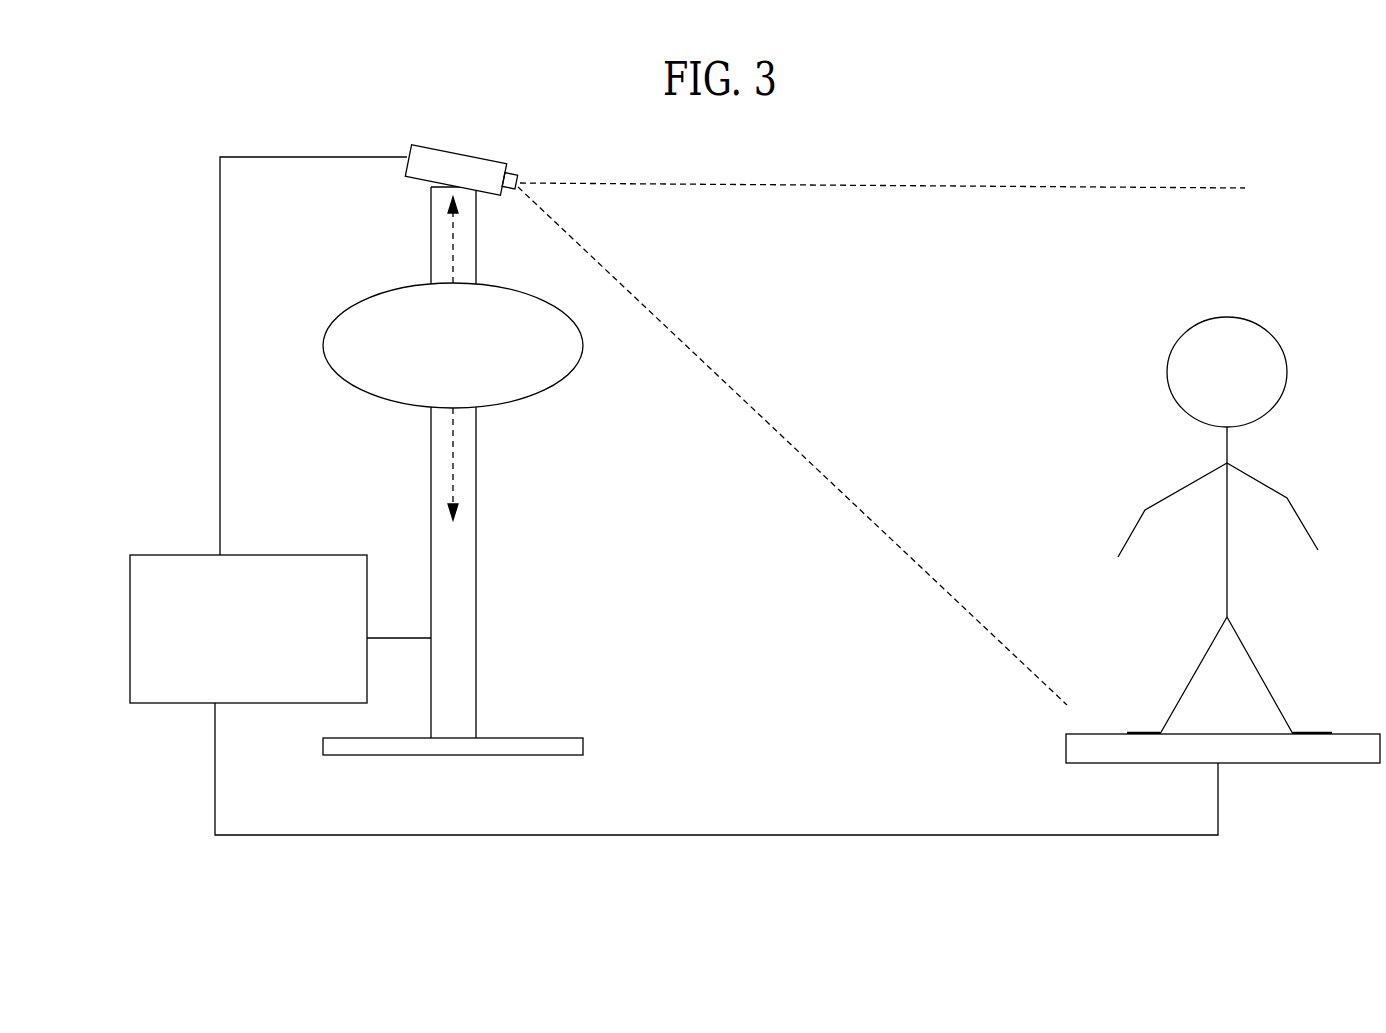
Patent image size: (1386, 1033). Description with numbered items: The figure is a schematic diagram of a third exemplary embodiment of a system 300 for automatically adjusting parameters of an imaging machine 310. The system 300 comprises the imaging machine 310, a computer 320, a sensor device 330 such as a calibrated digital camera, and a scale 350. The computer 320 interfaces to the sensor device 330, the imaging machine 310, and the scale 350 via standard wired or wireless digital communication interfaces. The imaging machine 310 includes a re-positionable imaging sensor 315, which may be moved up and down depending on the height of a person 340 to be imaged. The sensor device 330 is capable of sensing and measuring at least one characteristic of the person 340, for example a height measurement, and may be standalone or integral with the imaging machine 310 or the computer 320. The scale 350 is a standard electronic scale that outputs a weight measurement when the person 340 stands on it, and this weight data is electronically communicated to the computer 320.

The system 300 is at (212, 126).
The imaging machine 310 is at (403, 249).
The imaging sensor 315 is at (533, 397).
The computer 320 is at (282, 555).
The sensor device 330 is at (453, 152).
The person 340 is at (1222, 318).
The scale 350 is at (1088, 763).